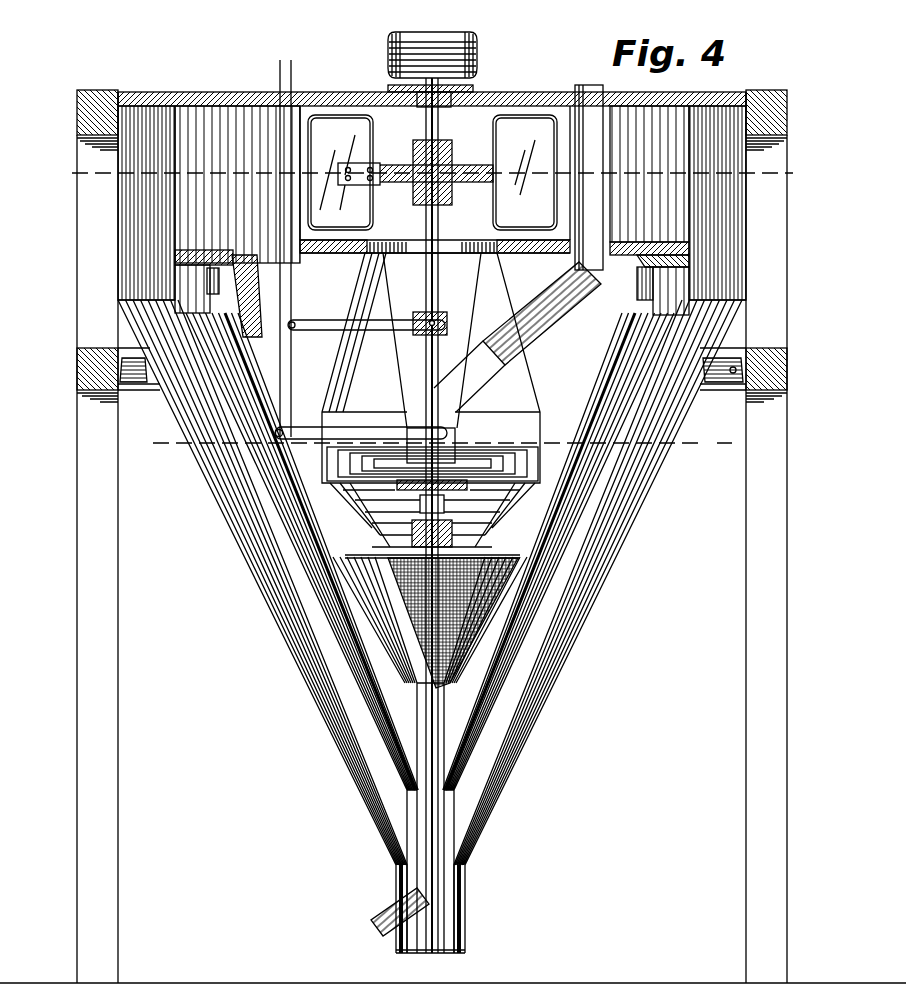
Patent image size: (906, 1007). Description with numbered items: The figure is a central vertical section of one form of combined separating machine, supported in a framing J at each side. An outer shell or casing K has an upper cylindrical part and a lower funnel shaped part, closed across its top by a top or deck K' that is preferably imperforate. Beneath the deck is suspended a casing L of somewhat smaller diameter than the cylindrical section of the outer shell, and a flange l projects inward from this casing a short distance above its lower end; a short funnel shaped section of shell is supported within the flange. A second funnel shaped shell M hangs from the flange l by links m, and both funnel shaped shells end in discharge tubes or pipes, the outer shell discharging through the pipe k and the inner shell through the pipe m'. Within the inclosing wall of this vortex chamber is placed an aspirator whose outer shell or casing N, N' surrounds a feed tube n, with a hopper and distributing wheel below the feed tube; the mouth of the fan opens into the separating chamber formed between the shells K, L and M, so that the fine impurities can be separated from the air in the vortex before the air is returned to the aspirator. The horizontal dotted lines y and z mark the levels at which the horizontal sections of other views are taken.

The framing J is at (796, 100).
The outer shell or casing K is at (432, 285).
The top or deck K' is at (430, 626).
The casing L is at (432, 203).
The flange l is at (215, 248).
The links m is at (432, 609).
The discharge tube or pipe m' is at (430, 962).
The central shaft with hand wheel o is at (415, 492).
The sight openings o' is at (485, 184).
The feed tube n is at (518, 248).
The outer shell or casing of aspirator N is at (447, 602).
The outer shell or casing of aspirator N' is at (431, 368).
The second funnel shaped shell M is at (430, 551).
The discharge tube or pipe k is at (425, 912).
The section line yy y is at (433, 445).
The section line zz z is at (426, 174).